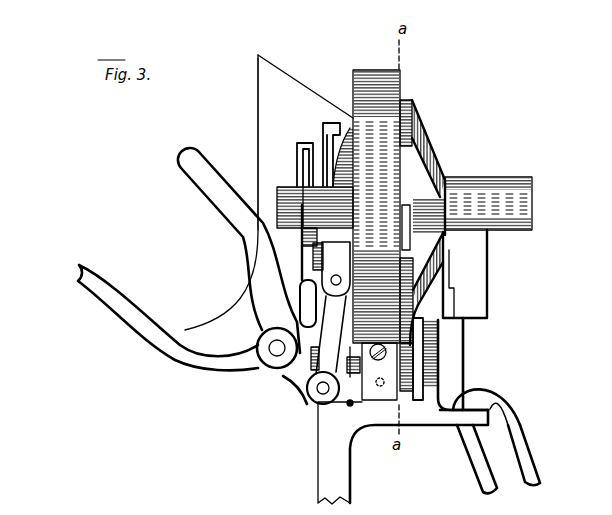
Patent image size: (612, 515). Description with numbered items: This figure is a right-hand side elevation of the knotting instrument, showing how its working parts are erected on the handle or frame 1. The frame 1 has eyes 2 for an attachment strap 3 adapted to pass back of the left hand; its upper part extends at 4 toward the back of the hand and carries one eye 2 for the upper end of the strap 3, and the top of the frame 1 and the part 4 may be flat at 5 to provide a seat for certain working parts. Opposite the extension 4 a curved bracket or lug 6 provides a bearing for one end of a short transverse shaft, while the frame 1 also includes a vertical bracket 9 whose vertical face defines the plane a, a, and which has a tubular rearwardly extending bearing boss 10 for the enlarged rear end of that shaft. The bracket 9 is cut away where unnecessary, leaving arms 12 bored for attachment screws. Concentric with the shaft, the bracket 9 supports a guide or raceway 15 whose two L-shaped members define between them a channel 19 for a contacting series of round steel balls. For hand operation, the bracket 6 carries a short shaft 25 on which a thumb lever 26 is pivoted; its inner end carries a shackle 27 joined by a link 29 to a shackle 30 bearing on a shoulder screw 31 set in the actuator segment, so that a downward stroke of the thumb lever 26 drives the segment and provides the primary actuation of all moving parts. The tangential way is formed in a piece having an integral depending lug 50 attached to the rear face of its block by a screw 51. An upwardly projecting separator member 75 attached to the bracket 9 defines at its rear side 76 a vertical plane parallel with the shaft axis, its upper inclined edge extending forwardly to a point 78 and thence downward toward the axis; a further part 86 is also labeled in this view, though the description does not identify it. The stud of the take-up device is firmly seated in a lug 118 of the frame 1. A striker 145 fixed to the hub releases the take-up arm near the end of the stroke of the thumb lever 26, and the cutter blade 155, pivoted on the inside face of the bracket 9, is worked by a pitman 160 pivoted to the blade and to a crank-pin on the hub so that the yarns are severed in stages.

The frame 1 is at (327, 479).
The eyes 2 is at (484, 413).
The attachment strap 3 is at (525, 432).
The frame extension 4 is at (440, 416).
The flat seat 5 is at (346, 404).
The curved bracket 6 is at (277, 187).
The vertical bracket 9 is at (442, 377).
The bearing boss 10 is at (490, 177).
The arms 12 is at (431, 136).
The raceway 15 is at (403, 82).
The channel 19 is at (411, 187).
The short shaft 25 is at (274, 350).
The thumb lever 26 is at (98, 302).
The shackle 27 is at (314, 386).
The link 29 is at (328, 312).
The shackle 30 is at (327, 271).
The shoulder screw 31 is at (314, 247).
The depending lug 50 is at (374, 386).
The screw 51 is at (392, 353).
The separator member 75 is at (255, 92).
The rear side 76 is at (283, 69).
The point 78 is at (259, 54).
The hook bracket 86 is at (332, 147).
The lug 118 is at (466, 330).
The striker 145 is at (328, 117).
The cutter blade 155 is at (418, 365).
The pitman 160 is at (444, 250).